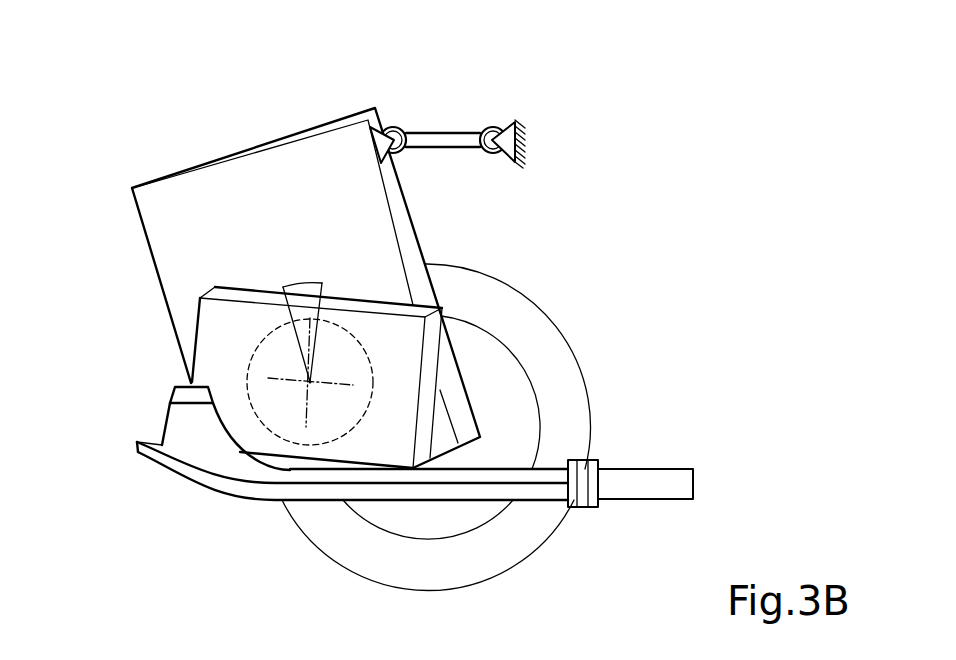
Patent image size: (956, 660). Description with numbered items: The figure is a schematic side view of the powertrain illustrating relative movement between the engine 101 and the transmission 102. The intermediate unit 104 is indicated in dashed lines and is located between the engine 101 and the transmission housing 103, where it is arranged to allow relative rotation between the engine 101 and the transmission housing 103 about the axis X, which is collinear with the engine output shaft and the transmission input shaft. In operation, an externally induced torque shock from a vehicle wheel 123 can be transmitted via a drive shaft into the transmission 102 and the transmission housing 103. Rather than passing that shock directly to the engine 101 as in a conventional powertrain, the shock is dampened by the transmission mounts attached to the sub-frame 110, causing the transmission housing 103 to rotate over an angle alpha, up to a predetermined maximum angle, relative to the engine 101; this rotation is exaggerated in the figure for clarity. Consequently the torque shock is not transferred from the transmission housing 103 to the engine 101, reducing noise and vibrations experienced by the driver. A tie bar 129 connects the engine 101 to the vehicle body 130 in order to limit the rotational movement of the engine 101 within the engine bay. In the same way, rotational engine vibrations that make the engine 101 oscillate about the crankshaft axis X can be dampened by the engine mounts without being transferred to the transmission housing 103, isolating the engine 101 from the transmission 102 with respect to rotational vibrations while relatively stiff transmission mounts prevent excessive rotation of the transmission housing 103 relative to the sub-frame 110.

The engine 101 is at (444, 226).
The transmission 102 is at (409, 324).
The transmission housing 103 is at (213, 350).
The intermediate unit 104 is at (233, 371).
The sub-frame 110 is at (180, 474).
The vehicle wheel 123 is at (563, 330).
The tie bar 129 is at (442, 142).
The vehicle body 130 is at (537, 142).
The axis X is at (302, 396).